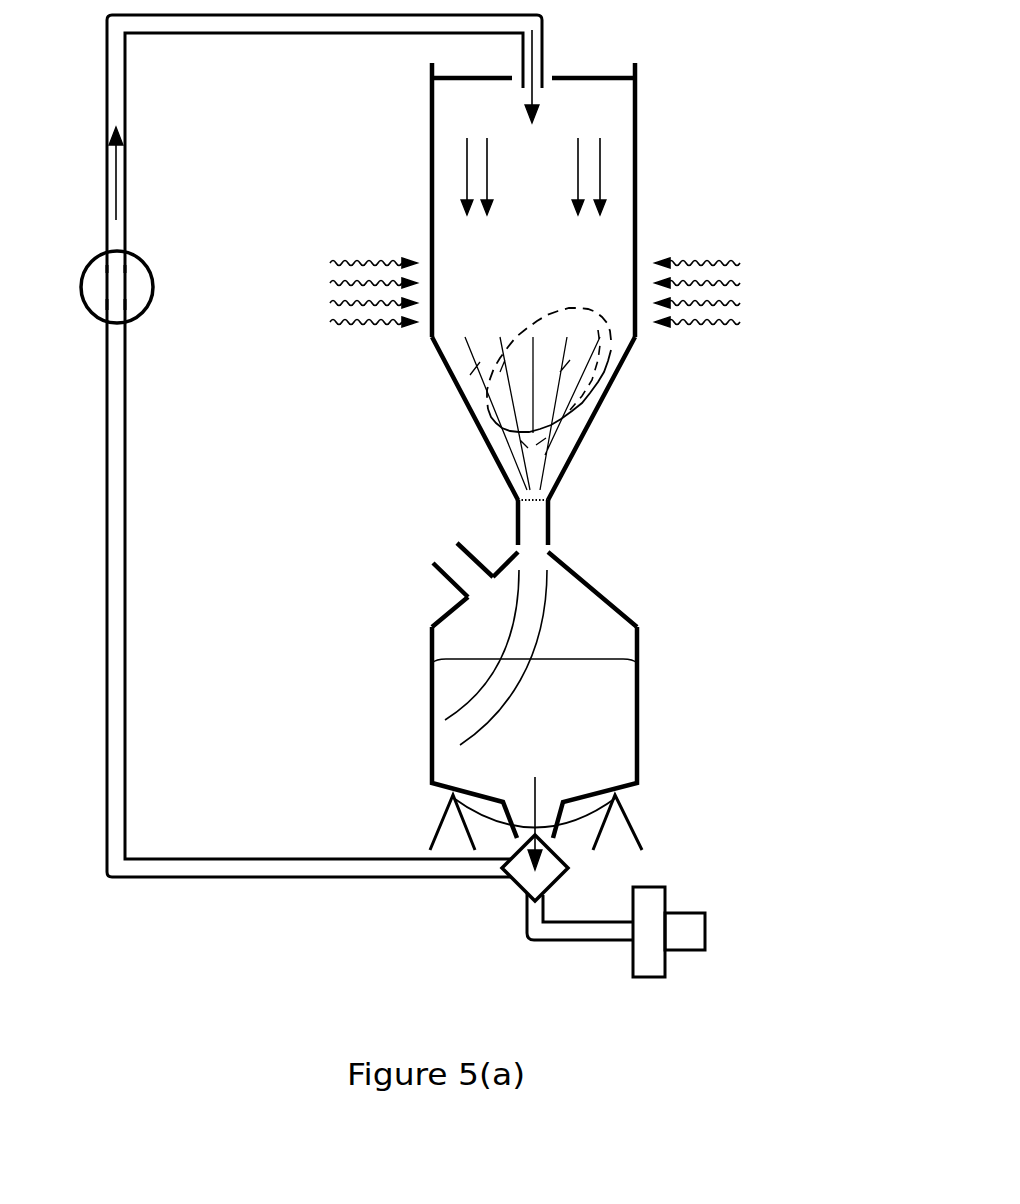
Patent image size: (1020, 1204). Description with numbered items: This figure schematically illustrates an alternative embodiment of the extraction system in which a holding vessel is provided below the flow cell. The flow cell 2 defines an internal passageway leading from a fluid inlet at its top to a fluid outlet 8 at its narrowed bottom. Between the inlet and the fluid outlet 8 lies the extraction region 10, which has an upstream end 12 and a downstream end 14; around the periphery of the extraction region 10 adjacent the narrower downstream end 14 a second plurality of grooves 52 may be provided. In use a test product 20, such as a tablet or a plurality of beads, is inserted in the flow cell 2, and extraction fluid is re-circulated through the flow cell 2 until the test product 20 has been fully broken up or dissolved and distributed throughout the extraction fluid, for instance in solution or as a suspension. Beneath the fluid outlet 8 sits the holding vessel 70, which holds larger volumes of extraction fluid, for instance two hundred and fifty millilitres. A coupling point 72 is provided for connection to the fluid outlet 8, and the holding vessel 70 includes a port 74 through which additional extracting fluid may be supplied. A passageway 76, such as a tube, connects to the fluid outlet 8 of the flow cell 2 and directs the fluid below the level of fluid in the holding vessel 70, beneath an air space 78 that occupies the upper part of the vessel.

The flow cell 2 is at (637, 150).
The upstream end 12 is at (637, 340).
The extraction region 10 is at (460, 390).
The second plurality of grooves 52 is at (542, 472).
The test product 20 is at (575, 357).
The downstream end 14 is at (550, 500).
The fluid outlet 8 is at (555, 533).
The coupling point 72 is at (510, 545).
The port 74 is at (453, 562).
The air space 78 is at (485, 627).
The passageway 76 is at (468, 703).
The holding vessel 70 is at (610, 698).